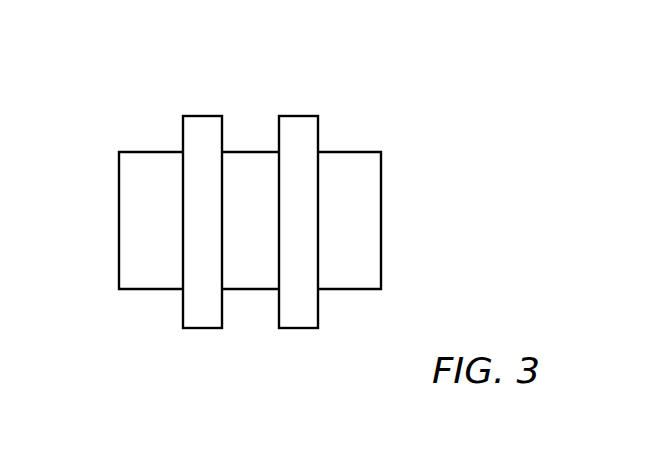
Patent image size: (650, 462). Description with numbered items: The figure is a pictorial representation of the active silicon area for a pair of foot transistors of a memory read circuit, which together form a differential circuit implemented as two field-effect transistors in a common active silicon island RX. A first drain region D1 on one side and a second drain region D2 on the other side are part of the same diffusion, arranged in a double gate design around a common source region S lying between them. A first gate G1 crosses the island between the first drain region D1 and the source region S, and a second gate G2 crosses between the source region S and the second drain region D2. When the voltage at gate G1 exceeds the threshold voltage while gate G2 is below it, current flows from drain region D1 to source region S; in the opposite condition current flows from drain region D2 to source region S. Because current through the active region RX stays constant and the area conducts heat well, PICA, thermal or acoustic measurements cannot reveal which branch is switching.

The active silicon island RX is at (72, 153).
The first drain region D1 is at (151, 67).
The second drain region D2 is at (350, 67).
The common source region S is at (252, 389).
The gate G1 is at (202, 246).
The gate G2 is at (298, 246).